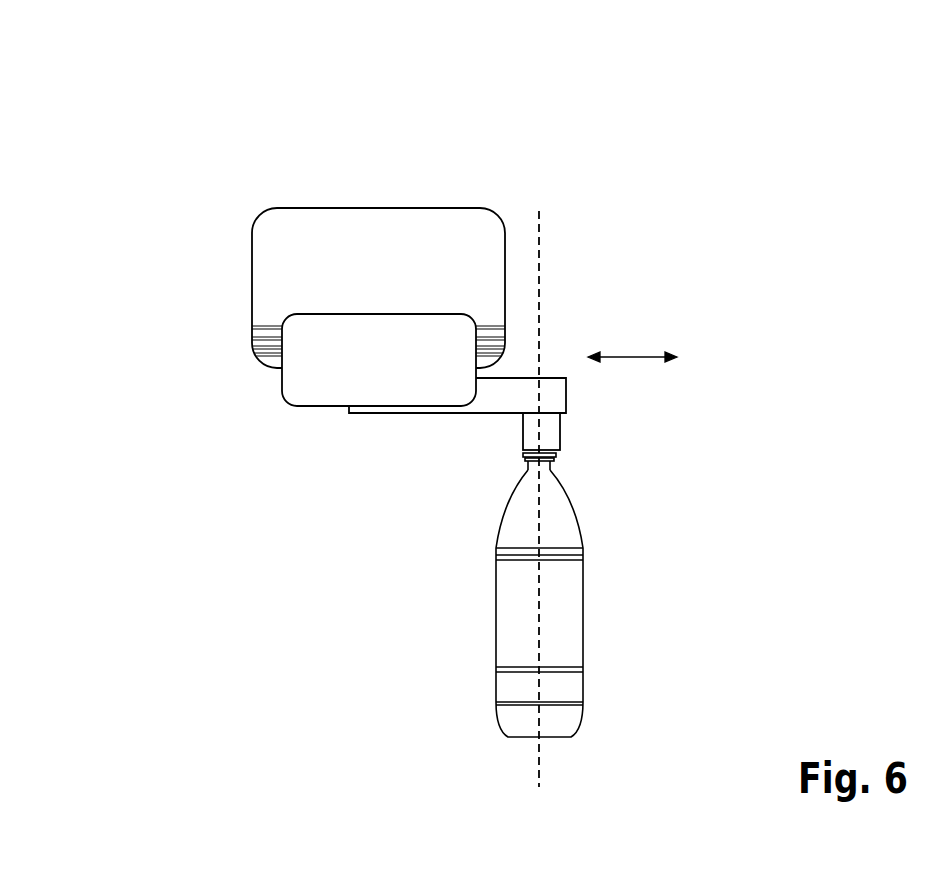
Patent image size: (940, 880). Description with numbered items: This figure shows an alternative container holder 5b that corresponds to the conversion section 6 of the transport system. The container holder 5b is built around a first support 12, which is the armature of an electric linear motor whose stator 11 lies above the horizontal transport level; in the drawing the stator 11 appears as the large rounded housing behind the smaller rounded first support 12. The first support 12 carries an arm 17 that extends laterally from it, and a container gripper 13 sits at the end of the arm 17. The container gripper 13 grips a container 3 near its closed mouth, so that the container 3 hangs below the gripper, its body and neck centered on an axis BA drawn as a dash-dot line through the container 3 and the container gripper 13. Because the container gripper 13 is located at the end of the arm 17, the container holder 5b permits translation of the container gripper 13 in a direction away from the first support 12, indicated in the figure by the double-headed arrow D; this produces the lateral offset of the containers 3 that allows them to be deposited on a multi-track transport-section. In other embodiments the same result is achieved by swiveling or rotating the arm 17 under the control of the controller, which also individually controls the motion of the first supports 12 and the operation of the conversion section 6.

The conversion section 6 is at (409, 308).
The stator 11 is at (272, 256).
The first support 12 is at (328, 383).
The container holder 5b is at (338, 426).
The arm 17 is at (422, 410).
The container gripper 13 is at (550, 428).
The container 3 is at (575, 603).
The container axis BA is at (566, 499).
The direction of movement D is at (632, 375).